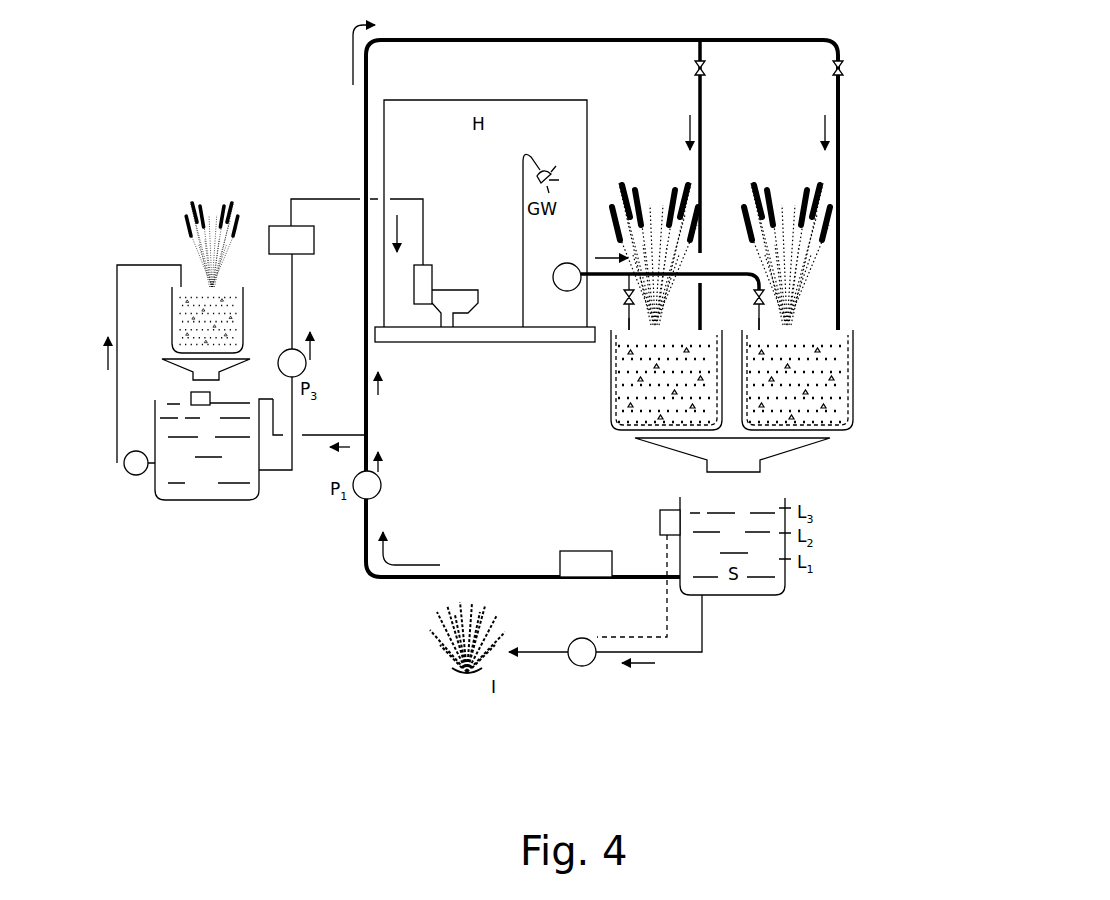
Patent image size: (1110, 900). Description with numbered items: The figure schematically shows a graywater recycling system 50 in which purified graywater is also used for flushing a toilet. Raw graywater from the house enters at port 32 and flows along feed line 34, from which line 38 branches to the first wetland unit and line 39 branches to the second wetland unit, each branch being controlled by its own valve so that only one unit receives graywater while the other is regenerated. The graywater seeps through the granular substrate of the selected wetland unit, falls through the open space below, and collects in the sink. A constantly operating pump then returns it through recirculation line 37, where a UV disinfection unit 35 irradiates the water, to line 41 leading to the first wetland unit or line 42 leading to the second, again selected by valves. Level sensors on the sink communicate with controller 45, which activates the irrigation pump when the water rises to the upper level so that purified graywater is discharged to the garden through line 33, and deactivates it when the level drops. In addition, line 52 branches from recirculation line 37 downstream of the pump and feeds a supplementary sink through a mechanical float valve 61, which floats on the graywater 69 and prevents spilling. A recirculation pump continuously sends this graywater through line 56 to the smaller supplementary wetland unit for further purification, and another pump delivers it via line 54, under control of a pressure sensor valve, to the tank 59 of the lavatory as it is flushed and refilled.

The port 32 is at (568, 263).
The line 33 is at (673, 652).
The feed line 34 is at (718, 270).
The recirculation ultraviolet-type (UV) disinfection unit 35 is at (580, 551).
The recirculation line 37 is at (364, 280).
The line 38 is at (627, 320).
The line 39 is at (762, 313).
The line 41 is at (700, 96).
The line 42 is at (840, 285).
The controller 45 is at (660, 521).
The system 50 is at (868, 164).
The line 52 is at (342, 432).
The line 54 is at (326, 199).
The line 56 is at (150, 265).
The tank 59 is at (414, 294).
The mechanical float valve 61 is at (190, 395).
The graywater 69 is at (184, 464).